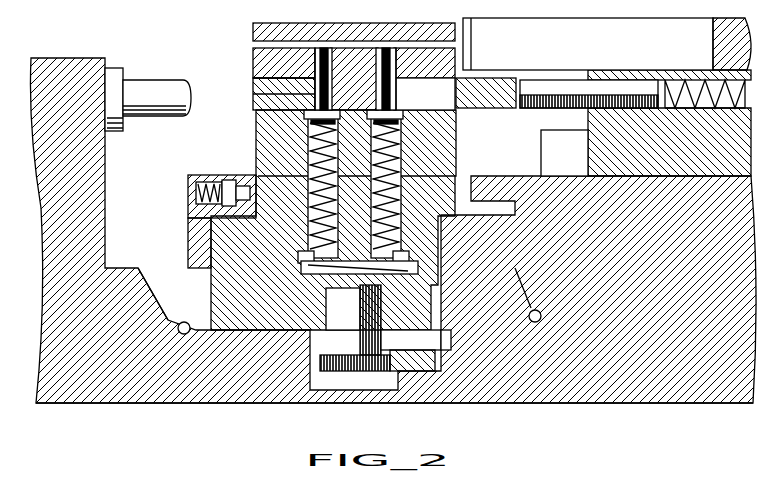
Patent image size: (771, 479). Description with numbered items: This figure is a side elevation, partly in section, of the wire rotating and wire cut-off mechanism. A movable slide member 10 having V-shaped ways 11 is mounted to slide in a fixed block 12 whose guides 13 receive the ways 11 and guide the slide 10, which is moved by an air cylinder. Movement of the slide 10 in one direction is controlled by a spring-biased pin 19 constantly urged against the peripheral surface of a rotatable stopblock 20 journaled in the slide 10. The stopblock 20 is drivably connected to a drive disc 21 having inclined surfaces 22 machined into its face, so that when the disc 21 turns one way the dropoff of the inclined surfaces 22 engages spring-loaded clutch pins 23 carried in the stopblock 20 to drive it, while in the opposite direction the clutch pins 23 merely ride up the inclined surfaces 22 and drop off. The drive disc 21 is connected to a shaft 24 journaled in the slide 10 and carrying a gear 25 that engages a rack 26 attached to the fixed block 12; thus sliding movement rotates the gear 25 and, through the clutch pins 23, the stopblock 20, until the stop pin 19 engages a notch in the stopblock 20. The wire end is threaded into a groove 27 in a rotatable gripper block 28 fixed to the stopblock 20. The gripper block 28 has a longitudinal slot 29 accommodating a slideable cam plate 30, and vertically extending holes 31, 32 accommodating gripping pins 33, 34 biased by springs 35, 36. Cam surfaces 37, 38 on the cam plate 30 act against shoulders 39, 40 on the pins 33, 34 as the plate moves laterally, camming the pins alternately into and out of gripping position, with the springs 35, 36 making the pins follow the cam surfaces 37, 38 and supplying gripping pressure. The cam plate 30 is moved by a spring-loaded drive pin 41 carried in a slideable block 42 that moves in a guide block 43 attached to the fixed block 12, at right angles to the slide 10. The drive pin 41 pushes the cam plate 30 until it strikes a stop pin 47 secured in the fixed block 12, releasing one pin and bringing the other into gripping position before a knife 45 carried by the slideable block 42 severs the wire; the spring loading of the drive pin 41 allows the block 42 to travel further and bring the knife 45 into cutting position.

The slide member 10 is at (275, 310).
The V-shaped ways 11 is at (182, 324).
The fixed block 12 is at (72, 385).
The guides 13 is at (156, 306).
The spring-biased pin 19 is at (236, 172).
The stopblock 20 is at (466, 175).
The drive disc 21 is at (343, 308).
The inclined surfaces 22 is at (411, 339).
The clutch pins 23 is at (285, 262).
The shaft 24 is at (344, 318).
The gear 25 is at (338, 365).
The rack 26 is at (410, 365).
The groove 27 is at (246, 36).
The gripper block 28 is at (328, 22).
The slot 29 is at (248, 104).
The cam plate 30 is at (248, 96).
The hole 31 is at (310, 60).
The hole 32 is at (376, 42).
The gripping pin 33 is at (306, 64).
The gripping pin 34 is at (390, 50).
The spring 35 is at (305, 140).
The spring 36 is at (392, 152).
The cam surface 37 is at (350, 98).
The cam surface 38 is at (448, 108).
The shoulder 39 is at (248, 83).
The shoulder 40 is at (395, 102).
The drive pin 41 is at (545, 95).
The slideable block 42 is at (585, 128).
The guide block 43 is at (543, 149).
The knife 45 is at (512, 22).
The stop pin 47 is at (134, 97).